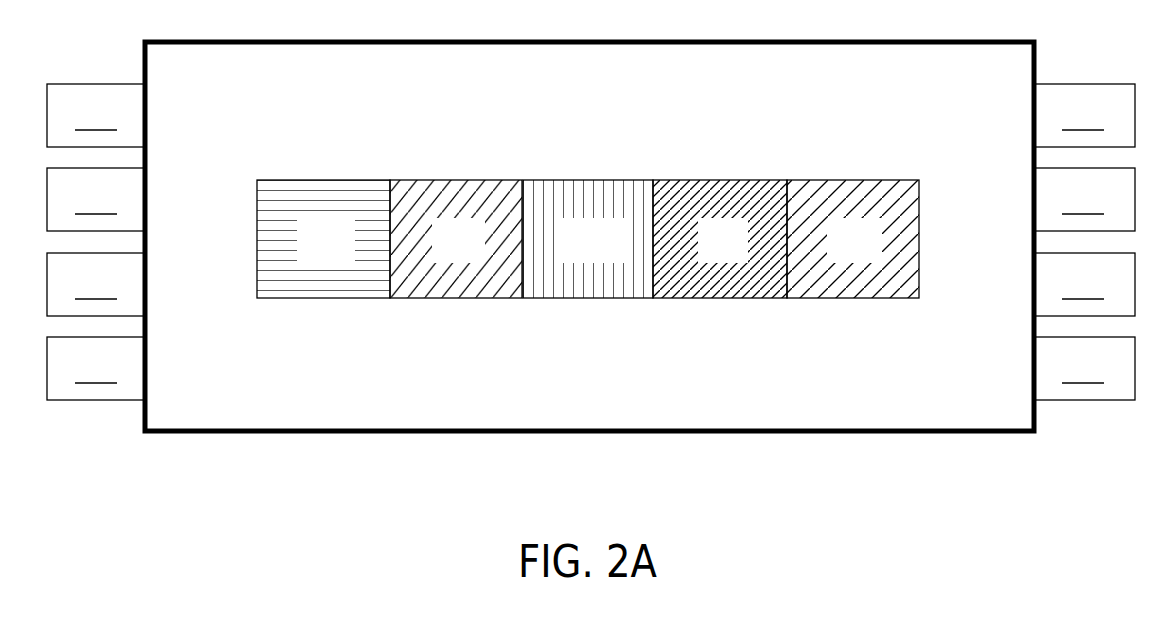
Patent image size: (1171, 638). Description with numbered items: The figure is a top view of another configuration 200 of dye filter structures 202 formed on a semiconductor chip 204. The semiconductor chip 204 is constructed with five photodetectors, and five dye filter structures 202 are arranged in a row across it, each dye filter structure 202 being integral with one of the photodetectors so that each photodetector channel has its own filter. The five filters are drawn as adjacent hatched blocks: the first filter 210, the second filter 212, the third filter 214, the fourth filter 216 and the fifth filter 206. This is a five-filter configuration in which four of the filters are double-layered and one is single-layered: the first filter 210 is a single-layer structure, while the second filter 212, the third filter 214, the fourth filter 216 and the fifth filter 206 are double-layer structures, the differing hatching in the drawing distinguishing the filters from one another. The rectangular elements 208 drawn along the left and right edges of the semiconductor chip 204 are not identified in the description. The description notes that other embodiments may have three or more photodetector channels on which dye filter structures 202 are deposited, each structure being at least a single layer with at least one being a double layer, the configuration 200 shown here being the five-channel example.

The configuration 200 is at (591, 277).
The dye filter structures 202 is at (590, 240).
The semiconductor chip 204 is at (775, 434).
The F5 dye filter structure 206 is at (827, 180).
The input/output pads 208 is at (591, 242).
The F1 dye filter structure 210 is at (303, 180).
The F2 dye filter structure 212 is at (432, 180).
The F3 dye filter structure 214 is at (567, 180).
The F4 dye filter structure 216 is at (698, 180).